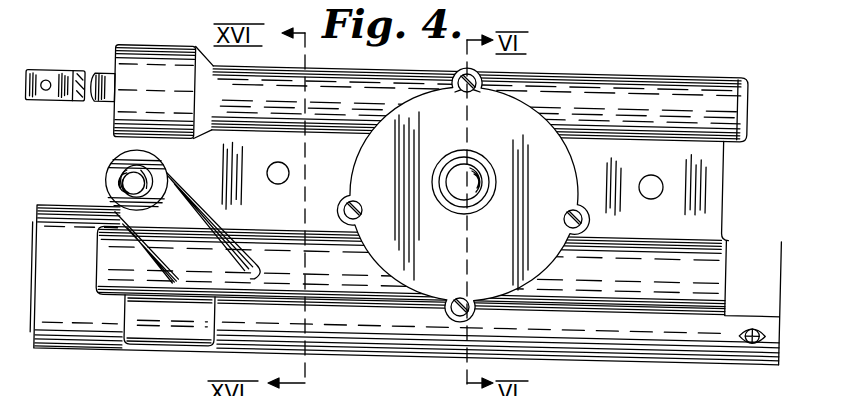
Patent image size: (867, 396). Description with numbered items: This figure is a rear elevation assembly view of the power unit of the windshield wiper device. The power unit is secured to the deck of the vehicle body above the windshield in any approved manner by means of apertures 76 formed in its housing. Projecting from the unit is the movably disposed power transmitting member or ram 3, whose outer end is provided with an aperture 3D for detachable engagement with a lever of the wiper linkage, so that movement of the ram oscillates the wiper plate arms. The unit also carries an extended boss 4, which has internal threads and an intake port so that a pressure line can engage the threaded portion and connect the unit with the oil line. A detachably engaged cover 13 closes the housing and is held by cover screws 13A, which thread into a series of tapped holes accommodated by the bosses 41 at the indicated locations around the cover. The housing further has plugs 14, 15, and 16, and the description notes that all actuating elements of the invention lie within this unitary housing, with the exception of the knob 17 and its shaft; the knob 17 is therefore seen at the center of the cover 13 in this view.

The power transmitting member or ram 3 is at (100, 82).
The aperture 3D is at (32, 79).
The extended boss 4 is at (108, 177).
The cover 13 is at (463, 195).
The cover screws 13A is at (482, 96).
The plug 14 is at (428, 311).
The plug 15 is at (36, 322).
The plug 16 is at (782, 335).
The knob 17 is at (482, 183).
The bosses 41 is at (460, 69).
The apertures 76 is at (283, 183).